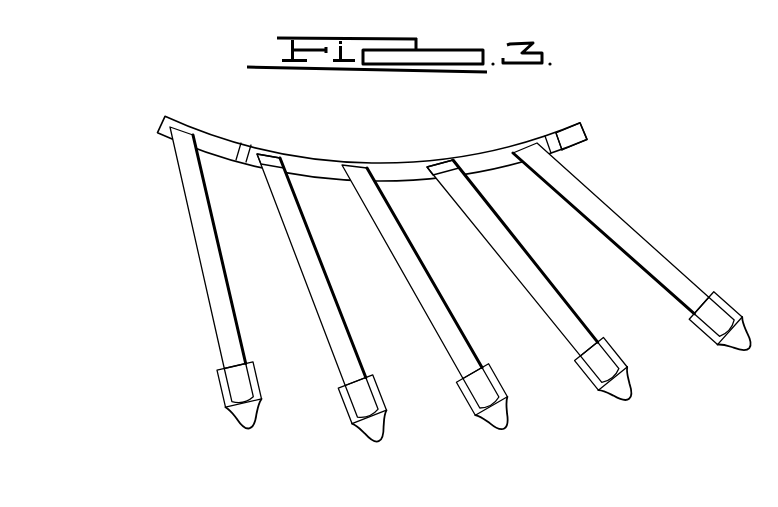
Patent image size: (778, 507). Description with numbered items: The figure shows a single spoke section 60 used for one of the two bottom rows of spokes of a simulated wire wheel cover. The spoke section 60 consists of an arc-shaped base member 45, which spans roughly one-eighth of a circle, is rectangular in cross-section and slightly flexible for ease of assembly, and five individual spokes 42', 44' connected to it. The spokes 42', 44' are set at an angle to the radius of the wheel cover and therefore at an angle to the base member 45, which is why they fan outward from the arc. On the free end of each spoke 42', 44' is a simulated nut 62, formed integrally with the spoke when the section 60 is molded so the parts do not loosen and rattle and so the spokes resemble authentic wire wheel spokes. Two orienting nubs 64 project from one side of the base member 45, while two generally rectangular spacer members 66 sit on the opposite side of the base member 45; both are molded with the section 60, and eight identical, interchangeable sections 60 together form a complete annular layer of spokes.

The spoke section 60 is at (339, 136).
The spacer member 66 is at (238, 146).
The orienting nub 64 is at (268, 155).
The base member 45 is at (570, 135).
The individual spoke member 42' is at (191, 248).
The individual spoke member 44' is at (271, 270).
The simulated nut 62 is at (360, 402).